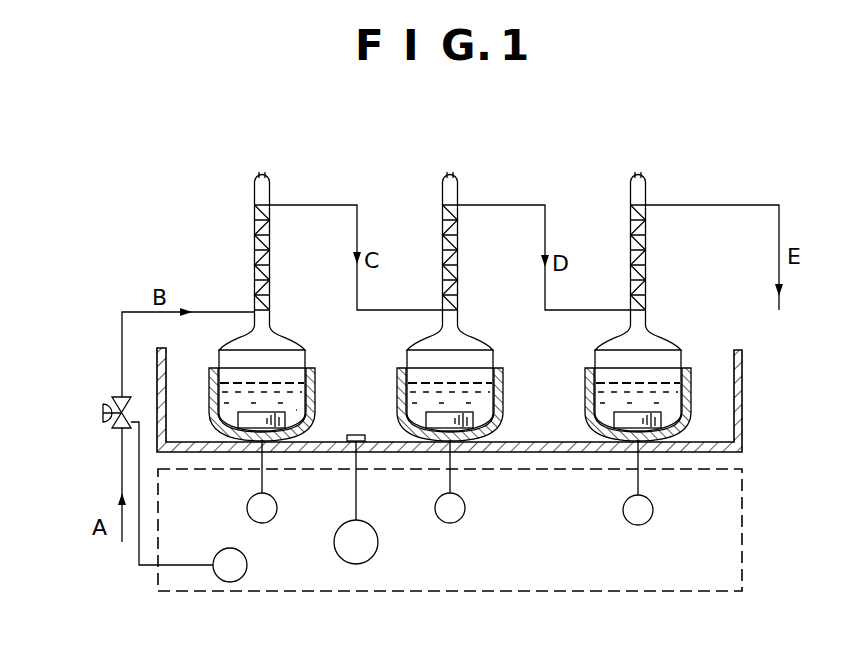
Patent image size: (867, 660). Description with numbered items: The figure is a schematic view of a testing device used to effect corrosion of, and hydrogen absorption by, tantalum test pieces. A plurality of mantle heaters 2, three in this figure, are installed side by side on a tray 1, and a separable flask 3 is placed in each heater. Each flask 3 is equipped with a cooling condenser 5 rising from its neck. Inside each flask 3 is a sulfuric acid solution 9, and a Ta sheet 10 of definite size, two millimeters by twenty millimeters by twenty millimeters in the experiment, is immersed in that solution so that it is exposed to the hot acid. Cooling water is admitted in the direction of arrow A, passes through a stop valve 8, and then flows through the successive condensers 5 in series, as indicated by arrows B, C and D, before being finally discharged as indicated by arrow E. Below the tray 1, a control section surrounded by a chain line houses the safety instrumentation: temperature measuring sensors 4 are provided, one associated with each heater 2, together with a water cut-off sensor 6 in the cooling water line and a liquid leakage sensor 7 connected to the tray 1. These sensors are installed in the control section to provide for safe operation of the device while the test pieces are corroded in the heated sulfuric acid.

The tray 1 is at (742, 407).
The mantle heater 2 is at (315, 382).
The separable flask 3 is at (288, 335).
The temperature measuring sensor 4 is at (277, 505).
The cooling condenser 5 is at (270, 246).
The water cut-off sensor 6 is at (247, 565).
The liquid leakage sensor 7 is at (378, 542).
The stop valve 8 is at (116, 398).
The sulfuric acid solution 9 is at (296, 410).
The Ta sheet 10 is at (245, 415).